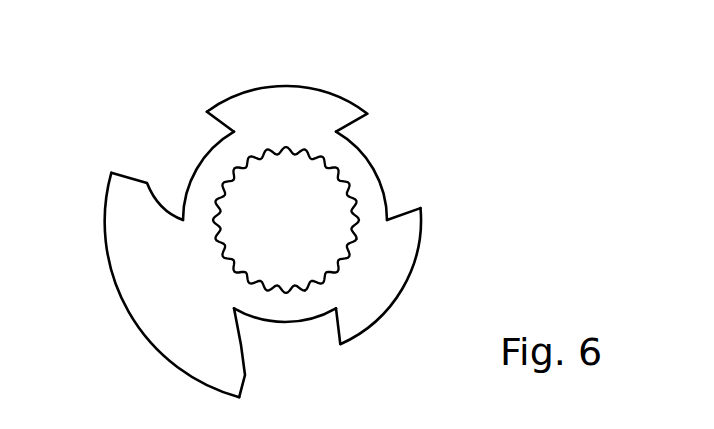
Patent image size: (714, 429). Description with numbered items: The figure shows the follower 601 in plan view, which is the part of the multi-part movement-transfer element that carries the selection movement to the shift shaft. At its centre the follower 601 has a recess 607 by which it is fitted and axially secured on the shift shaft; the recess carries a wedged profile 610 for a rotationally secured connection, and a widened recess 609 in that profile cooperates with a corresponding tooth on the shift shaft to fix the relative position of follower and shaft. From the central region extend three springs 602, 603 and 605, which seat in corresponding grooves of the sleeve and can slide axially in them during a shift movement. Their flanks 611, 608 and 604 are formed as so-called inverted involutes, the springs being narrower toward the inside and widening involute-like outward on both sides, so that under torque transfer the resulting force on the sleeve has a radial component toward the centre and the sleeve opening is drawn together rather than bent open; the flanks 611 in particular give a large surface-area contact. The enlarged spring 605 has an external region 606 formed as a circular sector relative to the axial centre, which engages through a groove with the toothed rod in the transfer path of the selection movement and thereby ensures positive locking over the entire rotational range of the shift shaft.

The follower 601 is at (421, 112).
The spring 602 is at (258, 107).
The spring 603 is at (412, 280).
The flank 604 is at (243, 344).
The enlarged spring 605 is at (137, 238).
The external region 606 is at (142, 335).
The recess 607 is at (293, 165).
The flank 608 is at (407, 207).
The widened recess 609 is at (340, 267).
The wedged profile 610 is at (198, 168).
The flank 611 is at (212, 125).